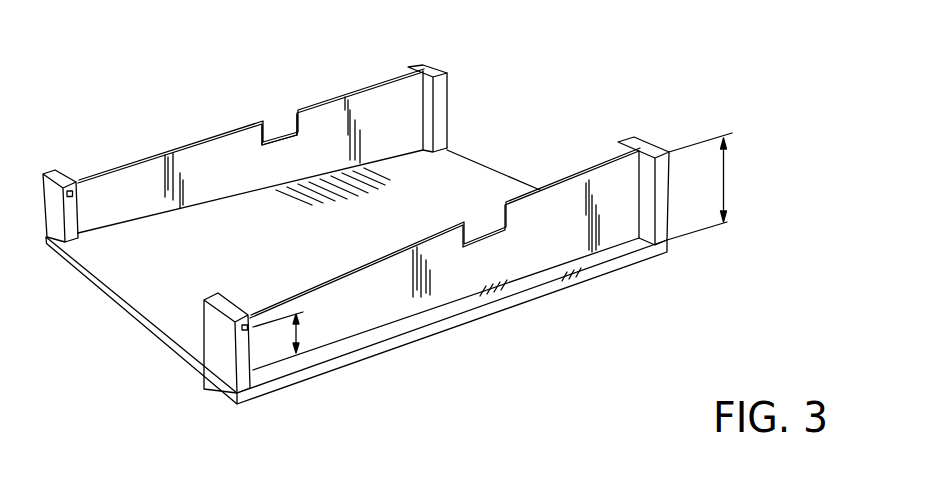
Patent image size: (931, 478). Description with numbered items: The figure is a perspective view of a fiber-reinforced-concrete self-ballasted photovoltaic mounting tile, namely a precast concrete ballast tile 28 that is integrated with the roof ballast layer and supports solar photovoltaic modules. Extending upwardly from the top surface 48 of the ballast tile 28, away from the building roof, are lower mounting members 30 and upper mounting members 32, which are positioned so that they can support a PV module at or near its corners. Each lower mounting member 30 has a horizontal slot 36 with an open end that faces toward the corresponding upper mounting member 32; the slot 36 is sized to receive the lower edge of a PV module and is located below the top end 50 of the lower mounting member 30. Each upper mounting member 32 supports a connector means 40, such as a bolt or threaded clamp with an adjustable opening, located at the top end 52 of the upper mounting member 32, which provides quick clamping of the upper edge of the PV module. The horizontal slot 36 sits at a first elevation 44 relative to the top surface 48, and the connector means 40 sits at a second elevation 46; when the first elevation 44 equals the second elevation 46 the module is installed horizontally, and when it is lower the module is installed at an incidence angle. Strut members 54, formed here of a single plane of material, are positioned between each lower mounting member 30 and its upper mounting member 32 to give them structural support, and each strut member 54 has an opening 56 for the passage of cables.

The ballast tile 28 is at (455, 188).
The lower mounting member 30 is at (66, 178).
The upper mounting member 32 is at (449, 90).
The horizontal slot 36 is at (73, 194).
The connector means 40 is at (647, 147).
The first elevation 44 is at (298, 330).
The second elevation 46 is at (724, 177).
The top surface 48 is at (502, 187).
The top end 50 is at (225, 302).
The top end 52 is at (420, 64).
The strut member 54 is at (205, 178).
The opening 56 is at (296, 116).